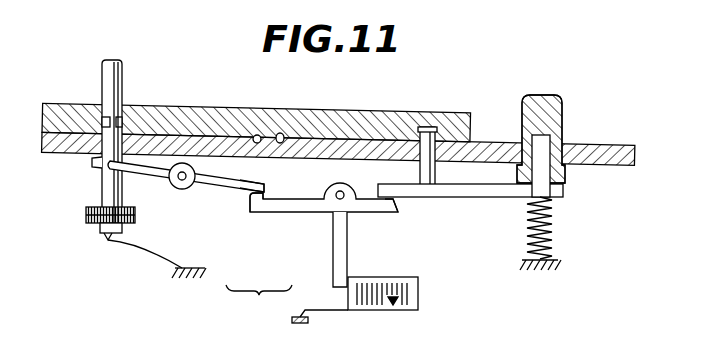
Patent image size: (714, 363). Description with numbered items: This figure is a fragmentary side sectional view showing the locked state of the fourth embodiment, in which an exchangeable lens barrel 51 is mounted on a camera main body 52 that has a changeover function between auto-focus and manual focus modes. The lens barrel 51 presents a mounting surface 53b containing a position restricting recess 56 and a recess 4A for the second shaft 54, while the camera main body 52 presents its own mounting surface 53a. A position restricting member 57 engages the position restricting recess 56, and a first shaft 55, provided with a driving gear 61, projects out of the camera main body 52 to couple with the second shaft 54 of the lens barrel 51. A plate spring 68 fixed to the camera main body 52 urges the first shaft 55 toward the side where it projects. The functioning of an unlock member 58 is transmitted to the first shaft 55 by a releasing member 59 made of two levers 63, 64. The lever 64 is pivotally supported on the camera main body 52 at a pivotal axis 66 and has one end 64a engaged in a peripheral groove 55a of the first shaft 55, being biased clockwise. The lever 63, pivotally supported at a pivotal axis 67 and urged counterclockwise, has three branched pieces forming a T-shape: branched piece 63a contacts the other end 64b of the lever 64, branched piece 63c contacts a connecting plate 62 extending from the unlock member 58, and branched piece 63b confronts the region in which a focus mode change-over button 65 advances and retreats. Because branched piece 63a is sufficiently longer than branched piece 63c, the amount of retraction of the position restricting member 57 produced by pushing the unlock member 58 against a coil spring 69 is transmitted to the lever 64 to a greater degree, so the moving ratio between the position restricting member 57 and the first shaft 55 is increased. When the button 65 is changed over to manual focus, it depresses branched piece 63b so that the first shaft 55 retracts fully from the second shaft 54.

The recess for the second shaft 4A is at (124, 130).
The exchangeable lens barrel 51 is at (472, 137).
The camera main body 52 is at (612, 152).
The camera main body side mounting surface 53a is at (282, 142).
The mounting surface at the side of the exchangeable lens barrel 53b is at (259, 135).
The second shaft 54 is at (112, 86).
The first shaft 55 is at (93, 160).
The peripheral groove 55a is at (104, 190).
The position restricting recess 56 is at (412, 170).
The position restricting member 57 is at (420, 128).
The unlock member 58 is at (558, 123).
The releasing member 59 is at (259, 304).
The driving gear 61 is at (95, 223).
The connecting plate 62 is at (483, 197).
The lever 63 is at (318, 214).
The branched piece 63a is at (273, 218).
The branched piece 63b is at (347, 268).
The branched piece 63c is at (392, 214).
The lever 64 is at (203, 192).
The one end of the lever 64a is at (131, 178).
The other end of the lever 64b is at (244, 193).
The focus mode change-over button 65 is at (418, 306).
The pivotal axis 66 is at (180, 192).
The pivotal axis 67 is at (340, 190).
The plate spring 68 is at (140, 248).
The coil spring 69 is at (555, 223).